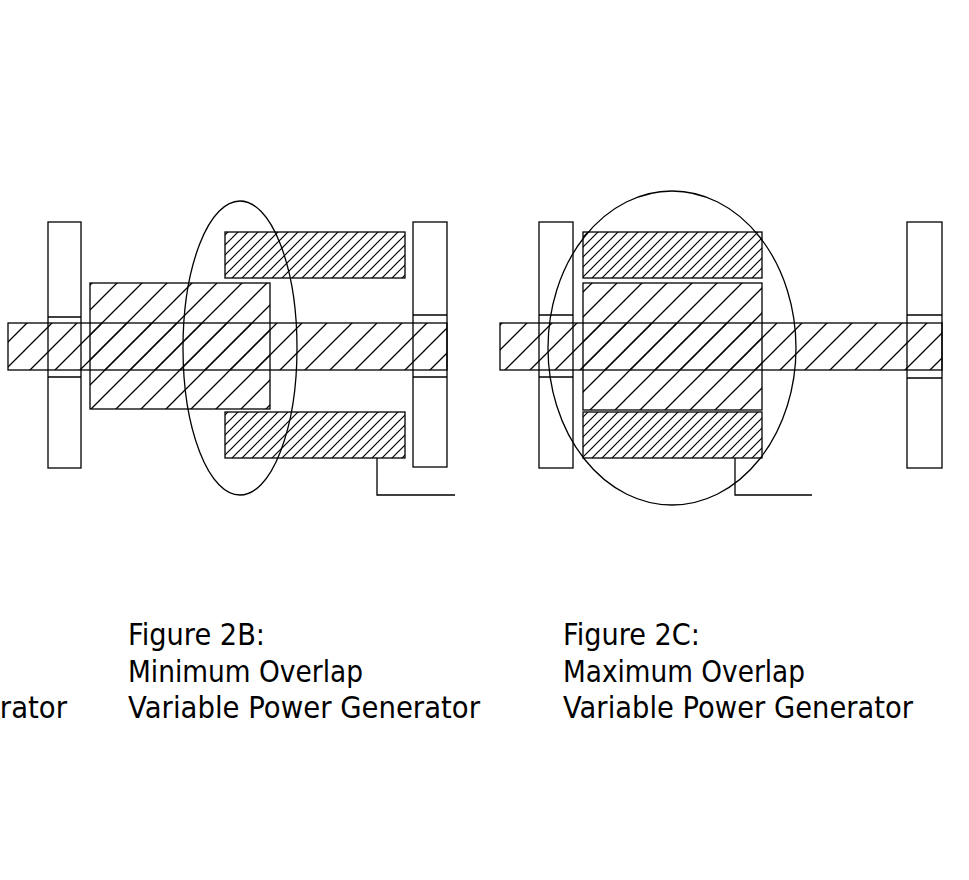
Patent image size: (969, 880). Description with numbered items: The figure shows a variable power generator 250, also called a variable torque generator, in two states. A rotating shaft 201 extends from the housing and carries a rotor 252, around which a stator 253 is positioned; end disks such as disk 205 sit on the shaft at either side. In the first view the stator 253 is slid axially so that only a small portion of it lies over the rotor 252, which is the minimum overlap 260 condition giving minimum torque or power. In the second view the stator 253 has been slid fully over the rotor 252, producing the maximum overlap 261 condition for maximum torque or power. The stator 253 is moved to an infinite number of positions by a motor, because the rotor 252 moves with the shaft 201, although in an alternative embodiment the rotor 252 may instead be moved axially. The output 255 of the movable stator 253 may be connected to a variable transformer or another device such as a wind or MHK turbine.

In FIG. 2B, the variable power generator 250 is at (192, 110).
In FIG. 2B, the shaft 201 is at (20, 342).
In FIG. 2C, the shaft 201 is at (513, 342).
In FIG. 2B, the end disk 205 is at (40, 368).
In FIG. 2B, the rotor 252 is at (158, 388).
In FIG. 2C, the rotor 252 is at (650, 388).
In FIG. 2B, the stator 253 is at (335, 242).
In FIG. 2C, the stator 253 is at (677, 245).
In FIG. 2B, the output 255 is at (454, 486).
In FIG. 2C, the output 255 is at (809, 487).
In FIG. 2B, the minimum overlap 260 is at (272, 195).
In FIG. 2C, the maximum overlap 261 is at (660, 183).